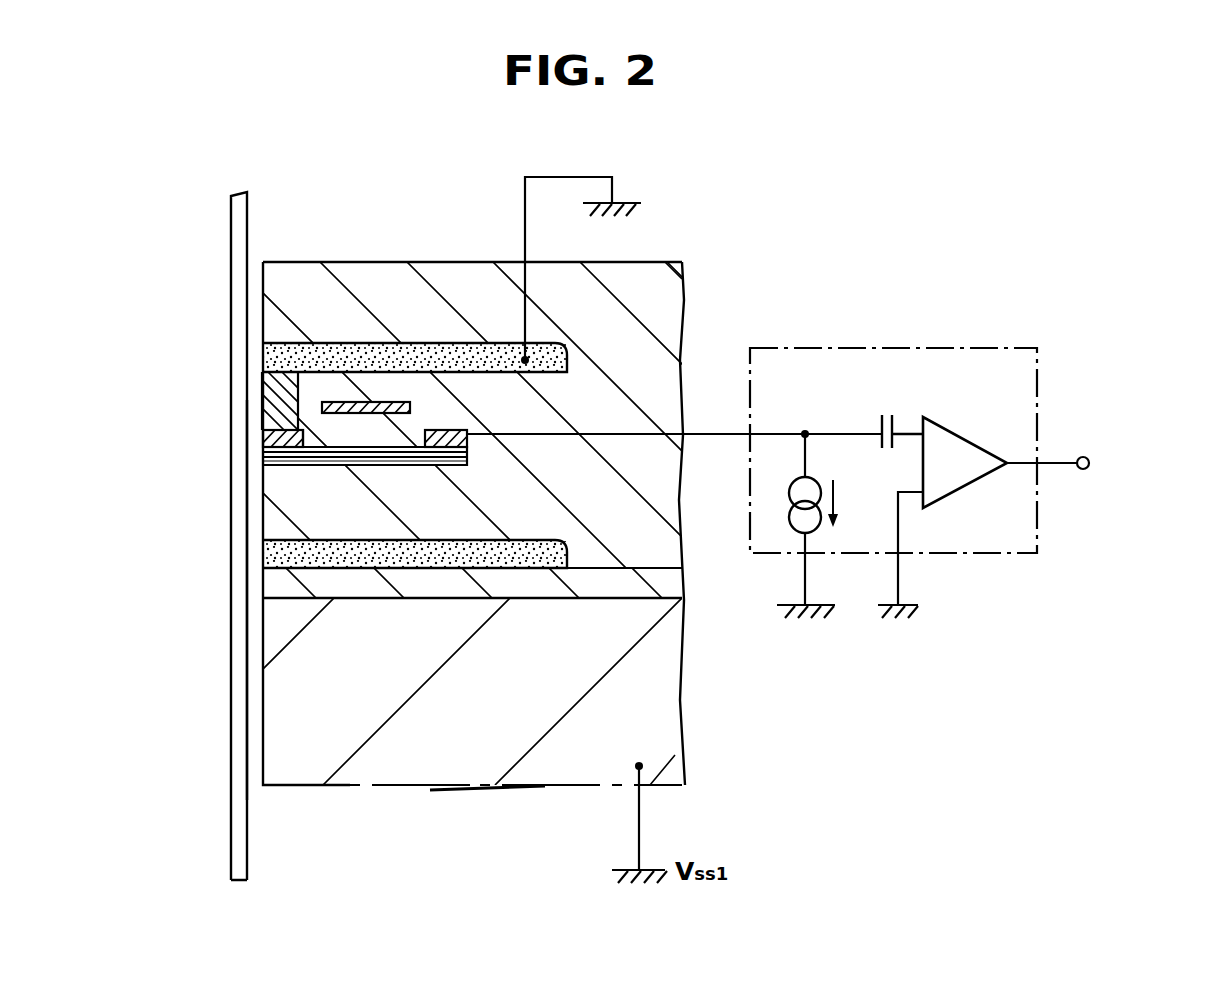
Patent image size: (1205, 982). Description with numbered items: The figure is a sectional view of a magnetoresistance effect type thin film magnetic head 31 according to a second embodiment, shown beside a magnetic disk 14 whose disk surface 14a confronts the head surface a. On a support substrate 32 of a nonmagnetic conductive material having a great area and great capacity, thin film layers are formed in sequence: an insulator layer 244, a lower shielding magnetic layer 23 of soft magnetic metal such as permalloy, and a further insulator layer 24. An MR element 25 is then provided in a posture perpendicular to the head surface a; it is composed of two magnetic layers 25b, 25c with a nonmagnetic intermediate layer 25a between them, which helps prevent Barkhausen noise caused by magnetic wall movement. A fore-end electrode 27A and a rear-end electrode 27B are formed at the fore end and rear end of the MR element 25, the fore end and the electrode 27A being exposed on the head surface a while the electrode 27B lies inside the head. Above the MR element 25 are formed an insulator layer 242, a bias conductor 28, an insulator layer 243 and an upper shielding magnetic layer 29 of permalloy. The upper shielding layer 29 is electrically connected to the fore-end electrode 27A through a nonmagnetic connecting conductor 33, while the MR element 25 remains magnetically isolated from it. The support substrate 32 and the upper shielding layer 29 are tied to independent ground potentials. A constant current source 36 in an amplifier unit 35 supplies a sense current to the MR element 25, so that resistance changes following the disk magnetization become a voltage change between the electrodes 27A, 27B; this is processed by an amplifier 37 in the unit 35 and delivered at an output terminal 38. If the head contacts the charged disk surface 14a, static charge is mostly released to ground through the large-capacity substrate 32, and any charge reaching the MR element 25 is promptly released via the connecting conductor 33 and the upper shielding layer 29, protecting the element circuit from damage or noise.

The thin film magnetic head 31 is at (310, 168).
The magnetic disk 14 is at (238, 828).
The disk surface 14a is at (248, 858).
The connecting conductor 33 is at (273, 392).
The head surface a is at (263, 406).
The fore-end electrode 27A is at (268, 437).
The rear-end electrode 27B is at (462, 434).
The bias conductor 28 is at (357, 402).
The upper shielding magnetic layer 29 is at (560, 352).
The lower shielding magnetic layer 23 is at (542, 562).
The insulator layer 24 is at (343, 598).
The insulator layer 242 is at (392, 435).
The insulator layer 243 is at (383, 383).
The insulator layer 244 is at (432, 587).
The MR element 25 is at (263, 515).
The nonmagnetic intermediate layer 25a is at (272, 455).
The magnetic layer 25b is at (262, 451).
The magnetic layer 25c is at (283, 462).
The support substrate 32 is at (672, 733).
The amplifier unit 35 is at (960, 348).
The constant current source 36 is at (790, 516).
The amplifier 37 is at (973, 480).
The output terminal 38 is at (1088, 468).